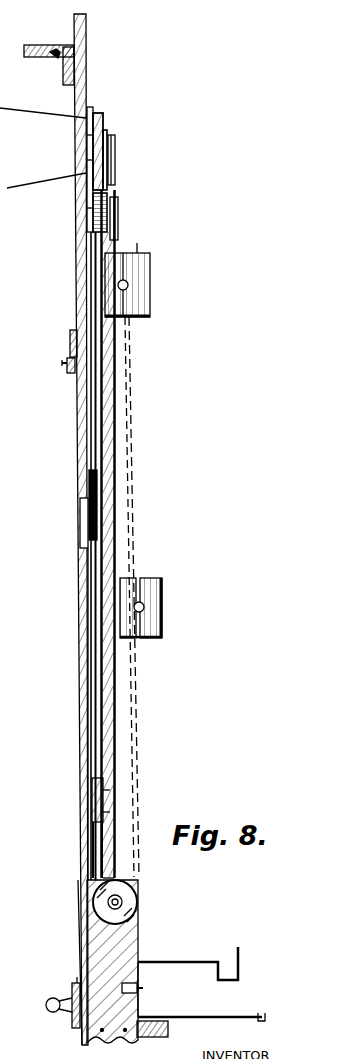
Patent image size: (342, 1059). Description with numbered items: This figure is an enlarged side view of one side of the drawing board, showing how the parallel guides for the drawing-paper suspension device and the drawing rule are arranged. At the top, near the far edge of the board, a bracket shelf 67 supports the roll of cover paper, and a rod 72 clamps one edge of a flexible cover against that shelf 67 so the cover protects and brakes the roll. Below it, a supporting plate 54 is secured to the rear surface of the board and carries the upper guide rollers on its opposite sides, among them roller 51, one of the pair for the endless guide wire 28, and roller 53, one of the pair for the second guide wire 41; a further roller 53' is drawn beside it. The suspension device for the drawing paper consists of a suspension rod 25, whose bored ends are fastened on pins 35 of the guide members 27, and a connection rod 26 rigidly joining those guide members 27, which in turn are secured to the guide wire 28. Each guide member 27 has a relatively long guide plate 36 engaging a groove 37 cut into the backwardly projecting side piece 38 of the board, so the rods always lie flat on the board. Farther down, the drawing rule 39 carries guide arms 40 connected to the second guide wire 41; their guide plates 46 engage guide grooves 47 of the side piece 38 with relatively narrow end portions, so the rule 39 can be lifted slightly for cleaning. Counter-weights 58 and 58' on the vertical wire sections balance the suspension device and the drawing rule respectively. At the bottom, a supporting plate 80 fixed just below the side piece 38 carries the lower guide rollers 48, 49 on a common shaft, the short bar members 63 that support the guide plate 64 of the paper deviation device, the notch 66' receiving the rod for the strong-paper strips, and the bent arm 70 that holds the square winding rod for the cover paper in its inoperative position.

The suspension rod 25 is at (69, 378).
The connection rod 26 is at (71, 350).
The guide member 27 is at (75, 457).
The endless guide wire 28 is at (138, 664).
The pin 35 is at (63, 366).
The guide plate 36 is at (93, 513).
The groove 37 is at (93, 570).
The side piece 38 is at (88, 720).
The drawing rule 39 is at (73, 982).
The guide arm 40 is at (78, 920).
The second guide wire 41 is at (133, 697).
The guide plate 46 is at (113, 805).
The guide groove 47 is at (104, 735).
The lower guide roller 48 is at (147, 902).
The lower guide roller 49 is at (125, 912).
The upper guide roller 51 is at (118, 208).
The upper guide roller 53 is at (126, 160).
The latch plate 53' is at (11, 300).
The supporting plate 54 is at (103, 128).
The counter-weight 58 is at (158, 608).
The counter-weight 58' is at (144, 291).
The short bar member 63 is at (180, 1017).
The guide plate 64 is at (248, 1027).
The notch 66' is at (145, 993).
The bracket shelf 67 is at (24, 50).
The bent arm 70 is at (201, 961).
The rod 72 is at (62, 63).
The supporting plate 80 is at (123, 953).